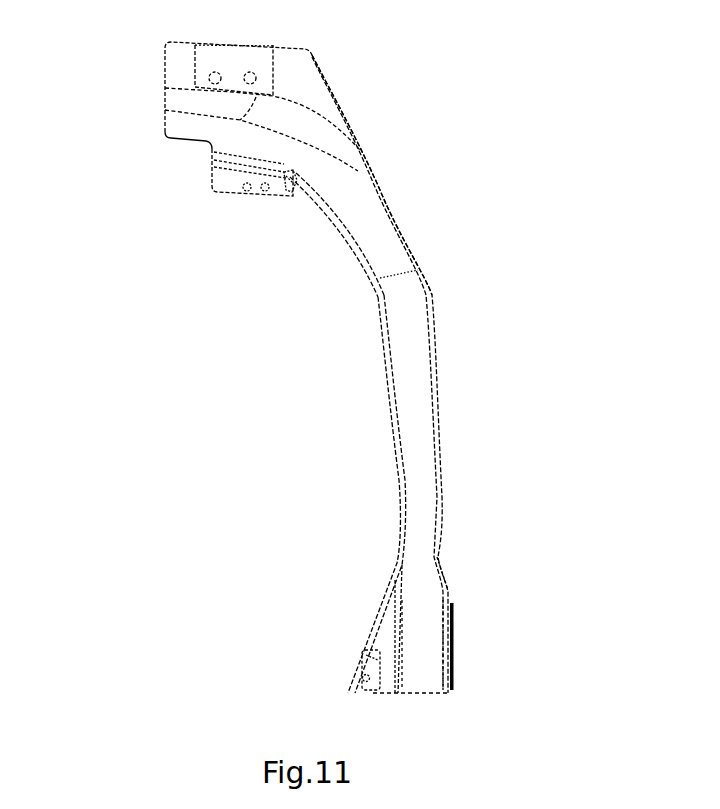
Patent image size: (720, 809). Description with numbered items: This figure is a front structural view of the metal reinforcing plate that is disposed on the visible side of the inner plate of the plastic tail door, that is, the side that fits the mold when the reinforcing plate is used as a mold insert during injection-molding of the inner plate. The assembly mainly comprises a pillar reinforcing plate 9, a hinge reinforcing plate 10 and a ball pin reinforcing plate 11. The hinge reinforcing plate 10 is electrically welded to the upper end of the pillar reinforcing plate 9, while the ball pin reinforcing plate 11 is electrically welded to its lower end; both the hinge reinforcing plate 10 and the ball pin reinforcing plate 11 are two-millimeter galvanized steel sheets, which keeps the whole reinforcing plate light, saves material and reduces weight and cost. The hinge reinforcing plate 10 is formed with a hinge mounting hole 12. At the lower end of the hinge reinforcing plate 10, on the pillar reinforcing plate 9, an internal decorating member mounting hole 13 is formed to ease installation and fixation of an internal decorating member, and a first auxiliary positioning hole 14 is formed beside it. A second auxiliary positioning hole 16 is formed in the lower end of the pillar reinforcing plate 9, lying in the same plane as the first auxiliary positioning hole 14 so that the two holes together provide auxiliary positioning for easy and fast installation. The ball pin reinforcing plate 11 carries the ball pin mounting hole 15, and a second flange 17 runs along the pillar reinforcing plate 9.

The pillar reinforcing plate 9 is at (375, 187).
The hinge reinforcing plate 10 is at (260, 63).
The ball pin reinforcing plate 11 is at (428, 640).
The hinge mounting hole 12 is at (233, 79).
The internal decorating member mounting hole 13 is at (246, 184).
The first auxiliary positioning hole 14 is at (290, 185).
The ball pin mounting hole 15 is at (446, 606).
The second auxiliary positioning hole 16 is at (373, 677).
The second flange 17 is at (412, 430).